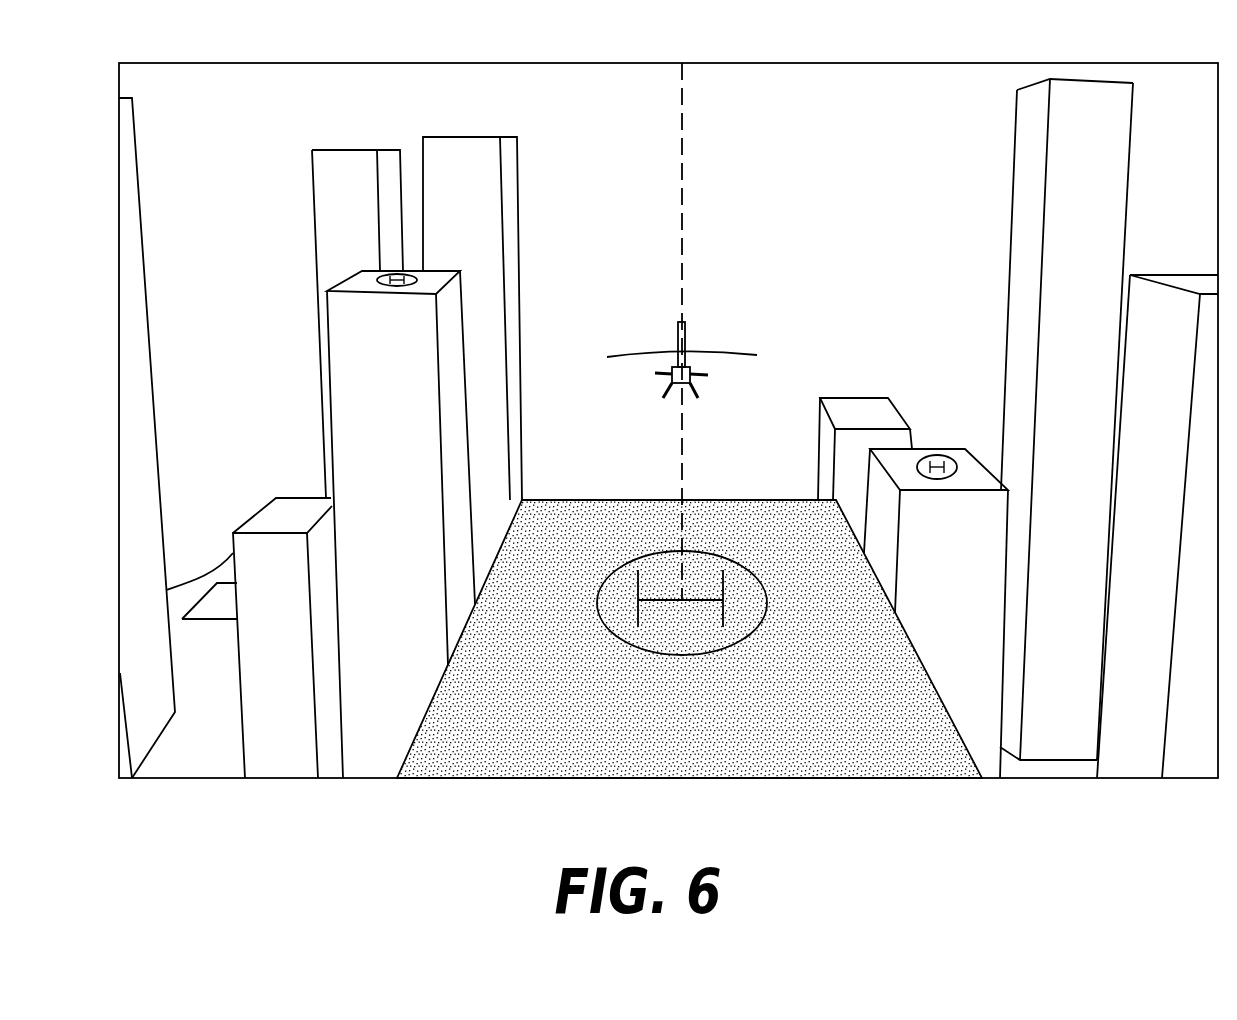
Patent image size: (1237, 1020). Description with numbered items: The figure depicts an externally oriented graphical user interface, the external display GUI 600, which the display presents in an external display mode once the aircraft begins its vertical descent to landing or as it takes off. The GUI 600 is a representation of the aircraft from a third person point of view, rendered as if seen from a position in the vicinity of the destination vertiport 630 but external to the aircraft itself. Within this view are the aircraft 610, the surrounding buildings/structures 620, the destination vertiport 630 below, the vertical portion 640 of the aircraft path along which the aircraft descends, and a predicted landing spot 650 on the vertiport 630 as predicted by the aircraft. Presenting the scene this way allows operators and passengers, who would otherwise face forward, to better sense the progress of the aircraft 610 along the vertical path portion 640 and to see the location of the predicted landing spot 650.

The external display GUI 600 is at (667, 34).
The aircraft 610 is at (678, 342).
The buildings/structures 620 is at (401, 142).
The destination vertiport 630 is at (616, 499).
The vertical portion of the aircraft path 640 is at (683, 200).
The predicted landing spot 650 is at (684, 600).